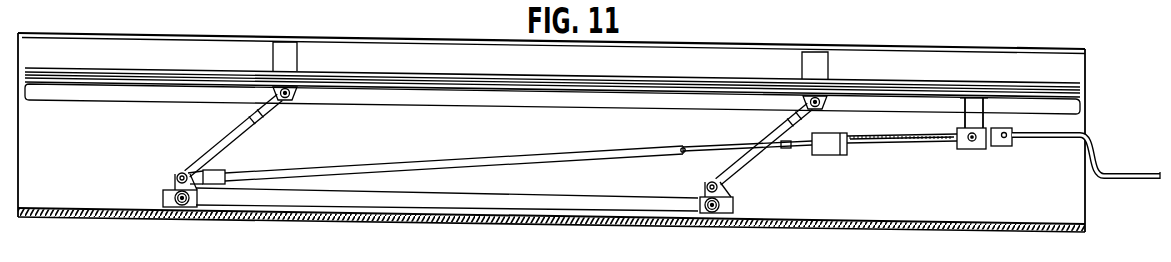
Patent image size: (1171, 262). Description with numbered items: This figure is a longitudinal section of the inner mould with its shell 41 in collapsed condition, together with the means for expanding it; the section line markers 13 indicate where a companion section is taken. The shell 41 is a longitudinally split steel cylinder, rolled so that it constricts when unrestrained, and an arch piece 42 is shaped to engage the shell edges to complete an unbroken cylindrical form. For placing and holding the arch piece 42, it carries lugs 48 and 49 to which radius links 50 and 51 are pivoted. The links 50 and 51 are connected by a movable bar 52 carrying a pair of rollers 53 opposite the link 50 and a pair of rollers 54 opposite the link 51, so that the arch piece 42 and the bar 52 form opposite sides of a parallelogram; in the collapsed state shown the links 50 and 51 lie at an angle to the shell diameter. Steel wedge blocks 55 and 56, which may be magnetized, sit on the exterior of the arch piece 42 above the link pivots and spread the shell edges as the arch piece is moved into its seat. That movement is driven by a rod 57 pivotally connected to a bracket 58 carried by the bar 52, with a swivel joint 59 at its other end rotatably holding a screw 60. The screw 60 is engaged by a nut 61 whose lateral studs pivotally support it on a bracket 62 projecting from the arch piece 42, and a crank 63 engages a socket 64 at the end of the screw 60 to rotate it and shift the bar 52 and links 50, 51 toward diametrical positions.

The section line 13- 13 is at (113, 17).
The shell 41 is at (1072, 72).
The arch piece 42 is at (937, 84).
The lug 48 is at (291, 99).
The lug 49 is at (828, 97).
The radius link 50 is at (222, 144).
The radius link 51 is at (777, 128).
The movable bar 52 is at (637, 201).
The pair of rollers 53 is at (190, 208).
The pair of rollers 54 is at (712, 213).
The wedge block 55 is at (287, 52).
The wedge block 56 is at (816, 62).
The rod 57 is at (528, 162).
The bracket 58 is at (178, 175).
The swivel joint 59 is at (830, 152).
The screw 60 is at (913, 146).
The nut 61 is at (959, 149).
The bracket 62 is at (965, 118).
The crank 63 is at (1141, 172).
The socket 64 is at (1006, 144).